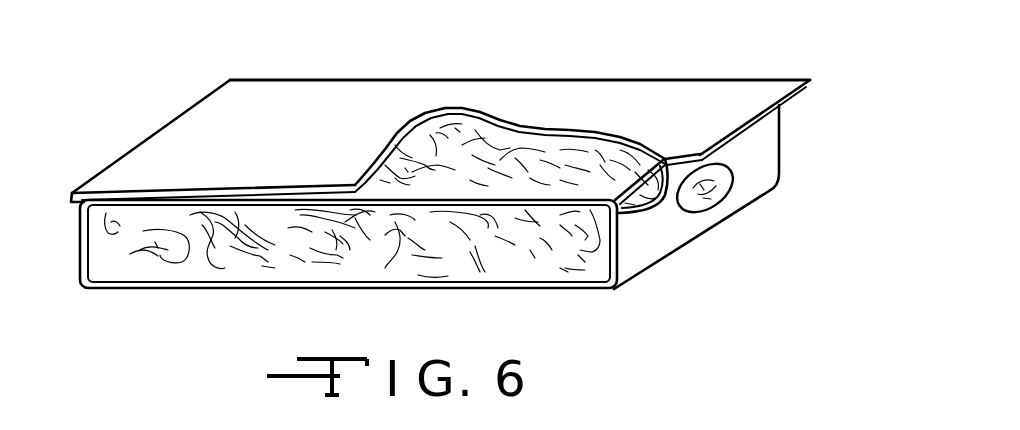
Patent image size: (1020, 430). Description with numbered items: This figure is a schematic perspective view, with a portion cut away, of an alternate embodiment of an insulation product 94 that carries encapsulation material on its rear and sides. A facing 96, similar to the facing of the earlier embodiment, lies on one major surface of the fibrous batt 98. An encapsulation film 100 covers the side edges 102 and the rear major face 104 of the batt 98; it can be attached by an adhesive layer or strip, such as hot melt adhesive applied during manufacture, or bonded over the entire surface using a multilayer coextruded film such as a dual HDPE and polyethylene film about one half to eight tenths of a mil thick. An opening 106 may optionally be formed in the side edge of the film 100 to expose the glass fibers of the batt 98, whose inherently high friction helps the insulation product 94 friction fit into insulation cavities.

The insulation product 94 is at (152, 118).
The facing 96 is at (332, 80).
The batt 98 is at (487, 147).
The encapsulation film 100 is at (783, 135).
The side edges 102 is at (647, 207).
The rear major face 104 is at (213, 280).
The opening 106 is at (717, 203).